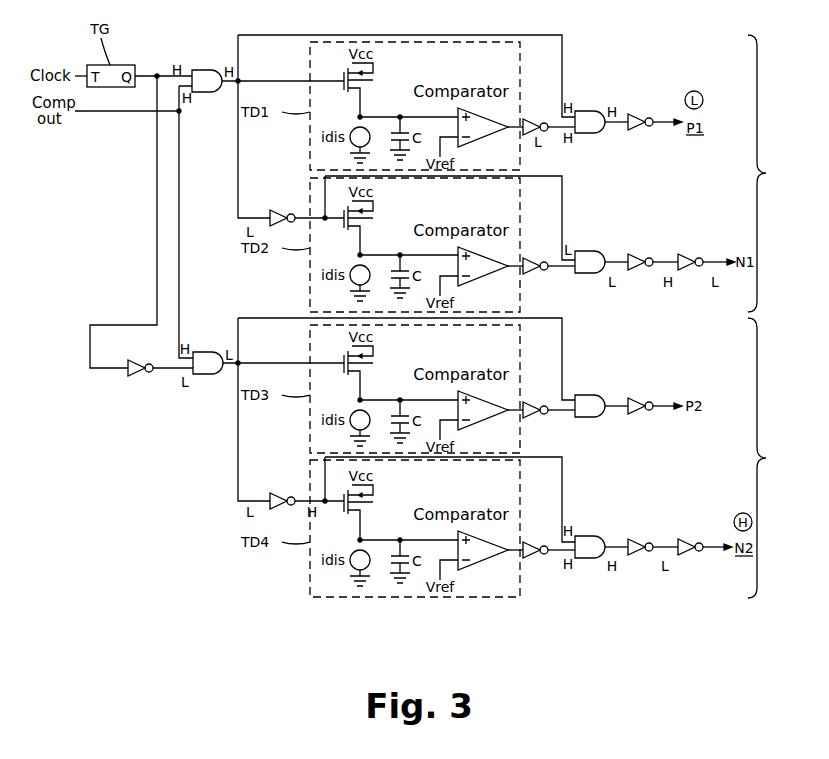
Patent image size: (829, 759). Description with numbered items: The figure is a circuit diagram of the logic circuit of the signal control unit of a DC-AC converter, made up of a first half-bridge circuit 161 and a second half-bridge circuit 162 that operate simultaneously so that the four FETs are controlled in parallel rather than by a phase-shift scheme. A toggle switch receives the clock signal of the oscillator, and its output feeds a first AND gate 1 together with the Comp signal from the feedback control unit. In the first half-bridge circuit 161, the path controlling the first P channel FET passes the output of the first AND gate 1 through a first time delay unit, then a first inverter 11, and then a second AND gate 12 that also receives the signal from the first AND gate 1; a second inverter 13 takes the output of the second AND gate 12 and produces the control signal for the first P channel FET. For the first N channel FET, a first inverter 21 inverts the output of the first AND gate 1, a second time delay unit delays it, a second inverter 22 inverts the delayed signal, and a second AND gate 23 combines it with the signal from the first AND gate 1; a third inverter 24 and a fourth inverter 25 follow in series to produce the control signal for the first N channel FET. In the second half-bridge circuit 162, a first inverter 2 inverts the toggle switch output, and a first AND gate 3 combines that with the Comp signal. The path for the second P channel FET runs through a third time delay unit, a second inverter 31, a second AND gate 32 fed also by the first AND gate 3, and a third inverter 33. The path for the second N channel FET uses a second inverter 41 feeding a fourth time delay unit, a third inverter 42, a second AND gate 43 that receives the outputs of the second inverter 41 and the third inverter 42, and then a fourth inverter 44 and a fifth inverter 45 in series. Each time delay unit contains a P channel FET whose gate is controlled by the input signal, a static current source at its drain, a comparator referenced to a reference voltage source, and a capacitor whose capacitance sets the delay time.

The first AND gate 1 is at (203, 70).
The first inverter 2 is at (136, 377).
The first AND gate 3 is at (203, 375).
The first inverter 11 is at (533, 119).
The second AND gate 12 is at (588, 111).
The second inverter 13 is at (637, 114).
The first inverter 21 is at (279, 211).
The second inverter 22 is at (533, 258).
The second AND gate 23 is at (588, 251).
The third inverter 24 is at (637, 254).
The fourth inverter 25 is at (688, 254).
The second inverter 31 is at (533, 402).
The second AND gate 32 is at (587, 395).
The third inverter 33 is at (637, 398).
The second inverter 41 is at (280, 493).
The third inverter 42 is at (533, 542).
The second AND gate 43 is at (588, 536).
The fourth inverter 44 is at (637, 539).
The fifth inverter 45 is at (688, 539).
The first half-bridge circuit 161 is at (773, 173).
The second half-bridge circuit 162 is at (773, 458).